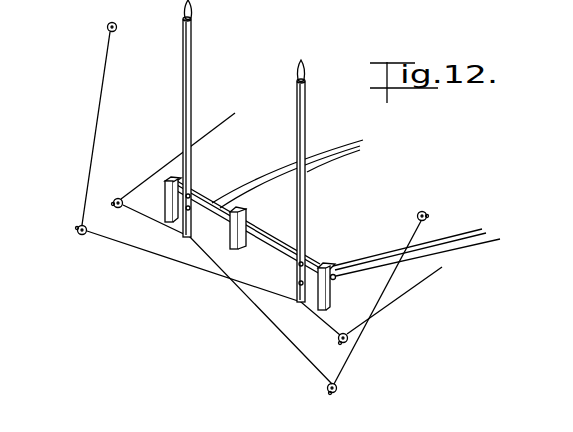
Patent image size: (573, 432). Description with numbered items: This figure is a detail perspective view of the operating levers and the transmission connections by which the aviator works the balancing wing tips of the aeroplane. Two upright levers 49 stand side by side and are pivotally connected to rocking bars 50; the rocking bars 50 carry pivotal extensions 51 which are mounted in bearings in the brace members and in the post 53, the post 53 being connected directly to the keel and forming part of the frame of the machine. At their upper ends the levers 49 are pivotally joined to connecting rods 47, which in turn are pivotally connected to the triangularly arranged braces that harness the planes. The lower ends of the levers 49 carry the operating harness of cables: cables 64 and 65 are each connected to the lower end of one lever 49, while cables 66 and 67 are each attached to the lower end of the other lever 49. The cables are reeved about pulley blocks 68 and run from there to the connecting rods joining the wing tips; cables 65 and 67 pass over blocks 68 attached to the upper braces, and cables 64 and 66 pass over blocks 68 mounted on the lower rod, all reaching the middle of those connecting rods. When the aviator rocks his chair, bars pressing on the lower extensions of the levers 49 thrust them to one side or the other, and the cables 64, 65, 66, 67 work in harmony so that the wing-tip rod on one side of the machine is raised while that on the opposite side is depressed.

The connecting rod 47 is at (333, 165).
The lever 49 is at (193, 52).
The rocking bar 50 is at (201, 201).
The pivotal extension 51 is at (336, 280).
The post 53 is at (250, 209).
The cable 64 is at (168, 164).
The cable 65 is at (418, 212).
The cable 66 is at (412, 287).
The cable 67 is at (98, 109).
The pulley block 68 is at (133, 41).